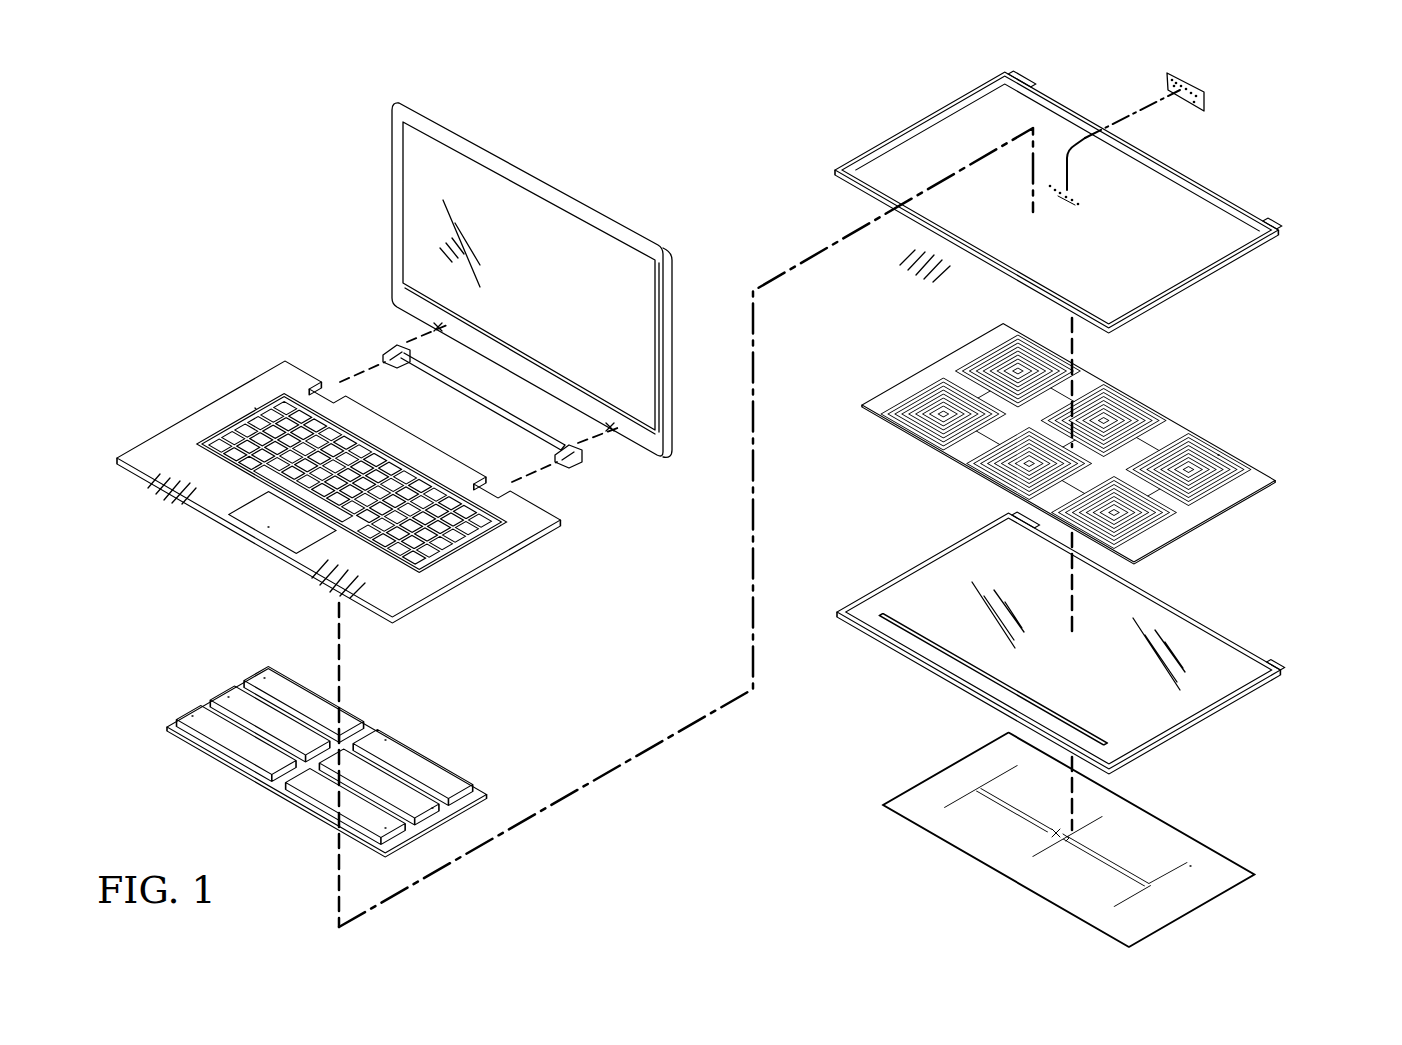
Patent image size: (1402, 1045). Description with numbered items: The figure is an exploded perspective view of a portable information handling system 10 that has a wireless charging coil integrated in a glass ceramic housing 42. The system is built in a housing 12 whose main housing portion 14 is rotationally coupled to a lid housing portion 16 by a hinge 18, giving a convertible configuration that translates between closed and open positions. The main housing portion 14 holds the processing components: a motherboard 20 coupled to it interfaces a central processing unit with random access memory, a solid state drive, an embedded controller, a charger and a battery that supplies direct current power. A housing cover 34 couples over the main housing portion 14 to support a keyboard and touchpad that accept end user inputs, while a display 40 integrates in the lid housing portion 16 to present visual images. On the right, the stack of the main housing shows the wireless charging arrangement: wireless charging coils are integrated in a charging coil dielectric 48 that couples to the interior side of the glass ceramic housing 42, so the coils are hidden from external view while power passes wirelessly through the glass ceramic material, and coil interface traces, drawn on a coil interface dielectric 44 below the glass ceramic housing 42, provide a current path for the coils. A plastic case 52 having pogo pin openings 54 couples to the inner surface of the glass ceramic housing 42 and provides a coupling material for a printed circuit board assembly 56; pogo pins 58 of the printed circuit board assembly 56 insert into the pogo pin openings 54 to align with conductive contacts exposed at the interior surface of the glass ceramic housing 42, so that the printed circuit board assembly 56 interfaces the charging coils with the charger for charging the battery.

The portable information handling system 10 is at (214, 180).
The housing 12 is at (1302, 194).
The main housing portion 14 is at (803, 750).
The lid housing portion 16 is at (532, 177).
The hinge 18 is at (379, 351).
The motherboard 20 is at (208, 752).
The housing cover 34 is at (527, 540).
The display 40 is at (549, 316).
The glass ceramic housing 42 is at (878, 588).
The coil interface dielectric 44 is at (918, 828).
The charging coil dielectric 48 is at (915, 378).
The plastic case 52 is at (1243, 258).
The pogo pin openings 54 is at (1090, 201).
The printed circuit board assembly 56 is at (1207, 98).
The pogo pins 58 is at (1165, 82).